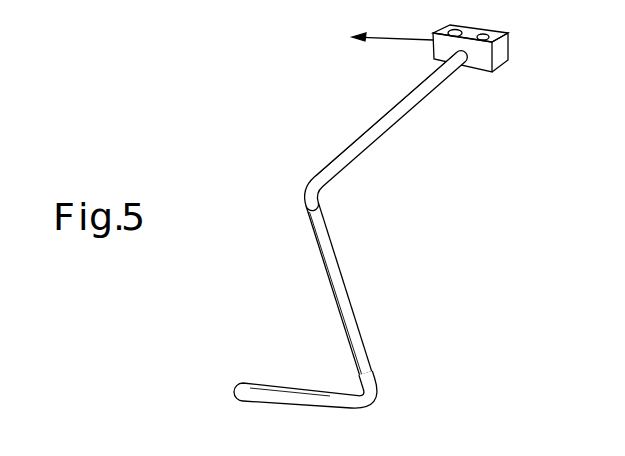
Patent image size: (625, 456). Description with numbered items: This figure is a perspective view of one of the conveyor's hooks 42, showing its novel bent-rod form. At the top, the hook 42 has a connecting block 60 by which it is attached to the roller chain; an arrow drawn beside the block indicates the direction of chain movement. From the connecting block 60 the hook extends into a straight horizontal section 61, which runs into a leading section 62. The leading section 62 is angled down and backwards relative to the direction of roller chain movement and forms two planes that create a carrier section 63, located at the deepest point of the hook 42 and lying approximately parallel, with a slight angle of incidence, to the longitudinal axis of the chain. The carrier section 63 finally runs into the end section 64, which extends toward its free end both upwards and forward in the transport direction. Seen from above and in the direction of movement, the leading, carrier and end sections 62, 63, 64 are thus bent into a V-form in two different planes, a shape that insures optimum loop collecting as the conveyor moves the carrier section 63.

The hook 42 is at (366, 245).
The connecting block 60 is at (503, 55).
The straight horizontal section 61 is at (386, 129).
The leading section 62 is at (338, 283).
The carrier section 63 is at (353, 403).
The end section 64 is at (278, 396).